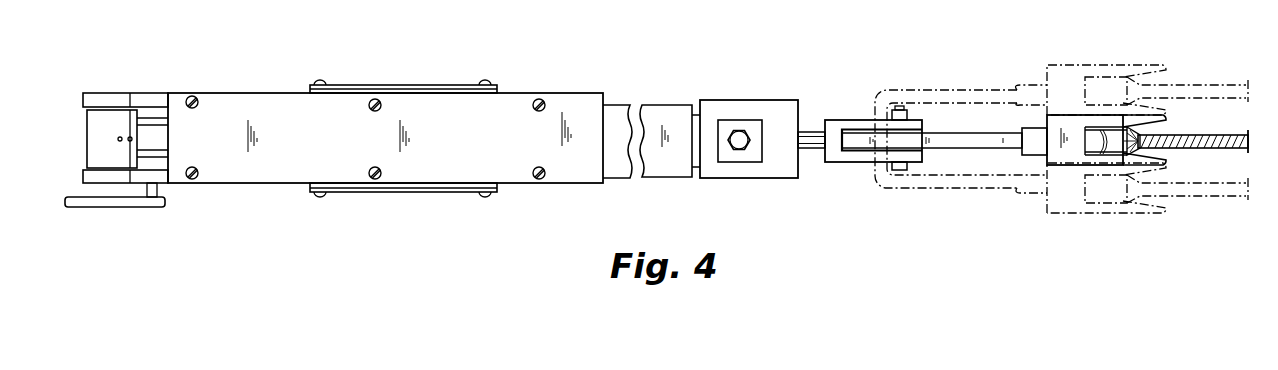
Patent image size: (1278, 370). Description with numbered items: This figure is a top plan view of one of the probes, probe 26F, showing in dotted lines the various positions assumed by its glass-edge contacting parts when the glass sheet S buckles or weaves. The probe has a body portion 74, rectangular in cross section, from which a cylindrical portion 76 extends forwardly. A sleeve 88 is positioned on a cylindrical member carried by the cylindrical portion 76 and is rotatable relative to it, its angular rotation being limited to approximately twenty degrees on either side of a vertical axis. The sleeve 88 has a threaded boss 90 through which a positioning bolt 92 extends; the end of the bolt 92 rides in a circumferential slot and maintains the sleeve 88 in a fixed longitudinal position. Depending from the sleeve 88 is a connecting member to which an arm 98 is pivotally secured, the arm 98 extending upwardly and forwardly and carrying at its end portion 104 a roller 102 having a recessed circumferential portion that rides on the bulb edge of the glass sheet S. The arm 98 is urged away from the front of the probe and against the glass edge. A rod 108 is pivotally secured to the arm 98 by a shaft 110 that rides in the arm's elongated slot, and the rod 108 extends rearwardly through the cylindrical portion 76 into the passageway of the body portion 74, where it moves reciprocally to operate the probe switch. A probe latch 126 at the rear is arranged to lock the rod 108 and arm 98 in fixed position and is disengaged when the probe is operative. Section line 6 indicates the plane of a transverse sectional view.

The section line 6- 6 is at (437, 52).
The probe 26F is at (538, 93).
The body portion 74 is at (270, 93).
The cylindrical portion 76 is at (665, 105).
The sleeve 88 is at (775, 100).
The threaded boss 90 is at (725, 120).
The positioning bolt 92 is at (737, 150).
The arm 98 is at (975, 148).
The roller 102 is at (1145, 140).
The end portion 104 is at (1055, 115).
The rod 108 is at (810, 133).
The shaft 110 is at (917, 112).
The probe latch 126 is at (87, 136).
The strap S is at (1213, 147).